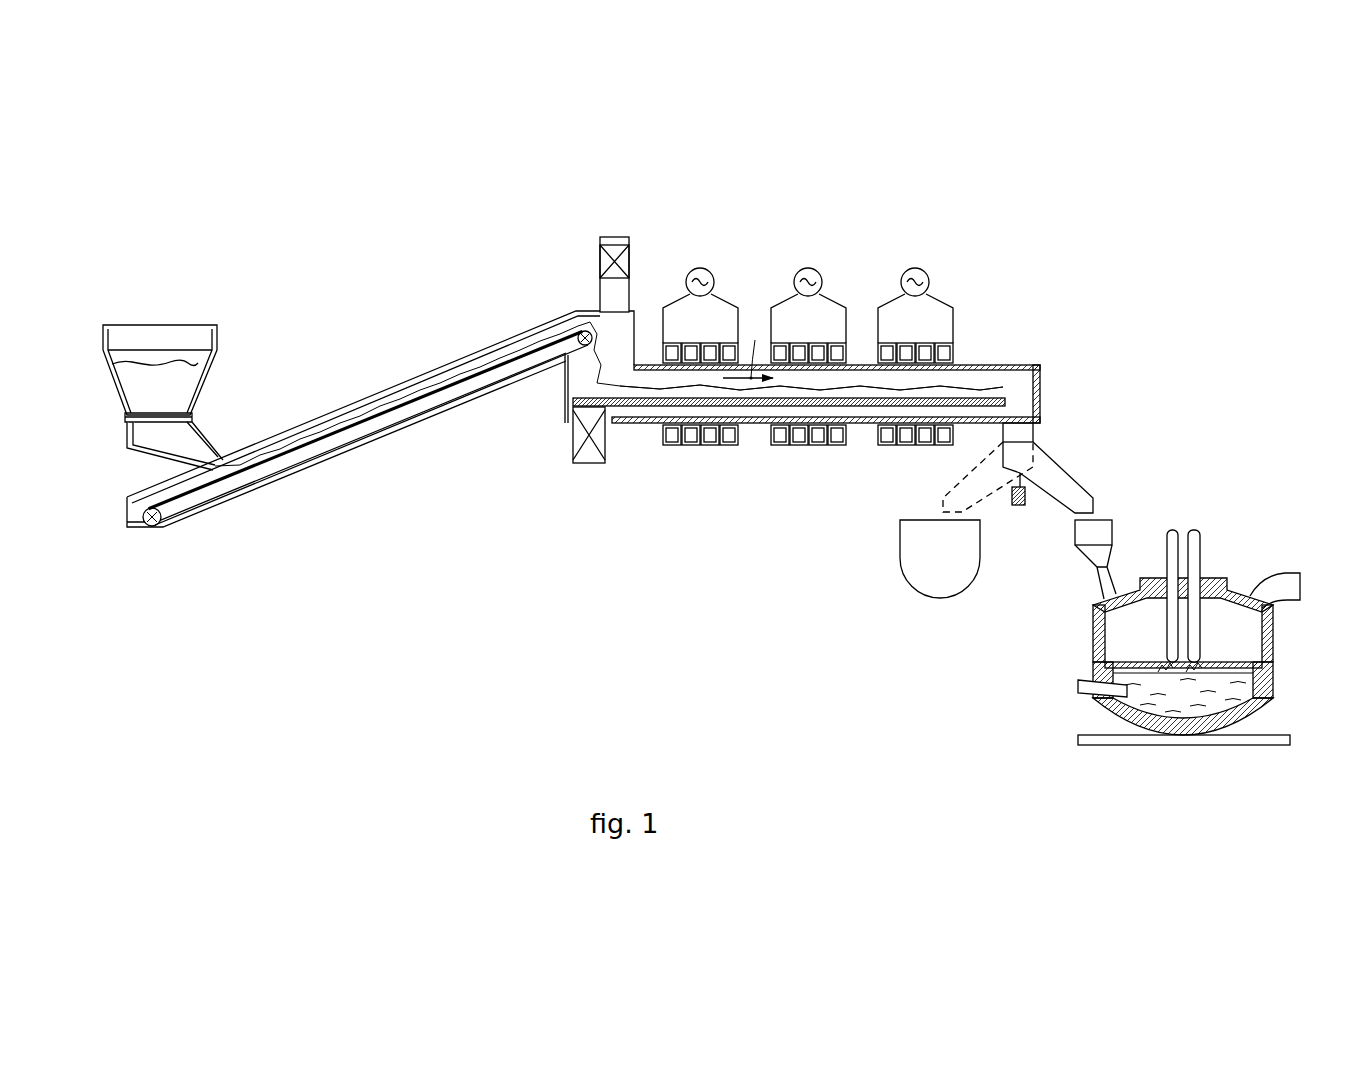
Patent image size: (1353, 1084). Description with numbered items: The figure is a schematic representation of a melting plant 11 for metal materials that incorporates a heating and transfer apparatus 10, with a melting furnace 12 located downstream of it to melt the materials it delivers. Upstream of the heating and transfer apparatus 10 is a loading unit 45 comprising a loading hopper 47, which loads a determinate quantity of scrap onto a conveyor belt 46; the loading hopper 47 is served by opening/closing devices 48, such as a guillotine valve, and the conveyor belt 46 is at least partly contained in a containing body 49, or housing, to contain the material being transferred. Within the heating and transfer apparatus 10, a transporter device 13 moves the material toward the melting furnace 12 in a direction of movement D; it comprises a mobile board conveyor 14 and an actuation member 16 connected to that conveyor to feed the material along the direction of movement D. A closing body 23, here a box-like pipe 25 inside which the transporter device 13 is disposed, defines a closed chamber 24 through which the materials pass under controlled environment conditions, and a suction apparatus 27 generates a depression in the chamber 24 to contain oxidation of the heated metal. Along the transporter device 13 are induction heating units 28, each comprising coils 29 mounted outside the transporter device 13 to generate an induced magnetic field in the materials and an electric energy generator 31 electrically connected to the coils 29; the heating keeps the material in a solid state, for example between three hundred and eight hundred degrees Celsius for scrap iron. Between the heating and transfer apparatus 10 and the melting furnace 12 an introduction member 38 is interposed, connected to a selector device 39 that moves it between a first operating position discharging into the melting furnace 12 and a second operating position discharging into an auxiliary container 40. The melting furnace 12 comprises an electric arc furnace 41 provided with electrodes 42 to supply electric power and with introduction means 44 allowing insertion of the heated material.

The heating and transfer apparatus 10 is at (836, 349).
The melting plant 11 is at (1192, 212).
The melting furnace 12 is at (1176, 614).
The transporter device 13 is at (966, 394).
The mobile board conveyor 14 is at (756, 403).
The actuation member 16 is at (592, 459).
The closing body 23 is at (1021, 364).
The closed chamber 24 is at (1017, 389).
The box-like pipe 25 is at (865, 421).
The suction apparatus 27 is at (597, 252).
The induction heating unit 28 is at (747, 249).
The coils 29 is at (715, 341).
The electric energy generator 31 is at (698, 277).
The introduction member 38 is at (1089, 485).
The selector device 39 is at (1023, 503).
The auxiliary container 40 is at (919, 553).
The electric arc furnace 41 is at (1102, 667).
The electrodes 42 is at (1195, 537).
The introduction means 44 is at (1113, 518).
The loading unit 45 is at (430, 372).
The conveyor belt 46 is at (448, 403).
The loading hopper 47 is at (165, 318).
The opening/closing devices 48 is at (177, 419).
The containing body 49 is at (492, 350).
The direction of movement D is at (748, 348).